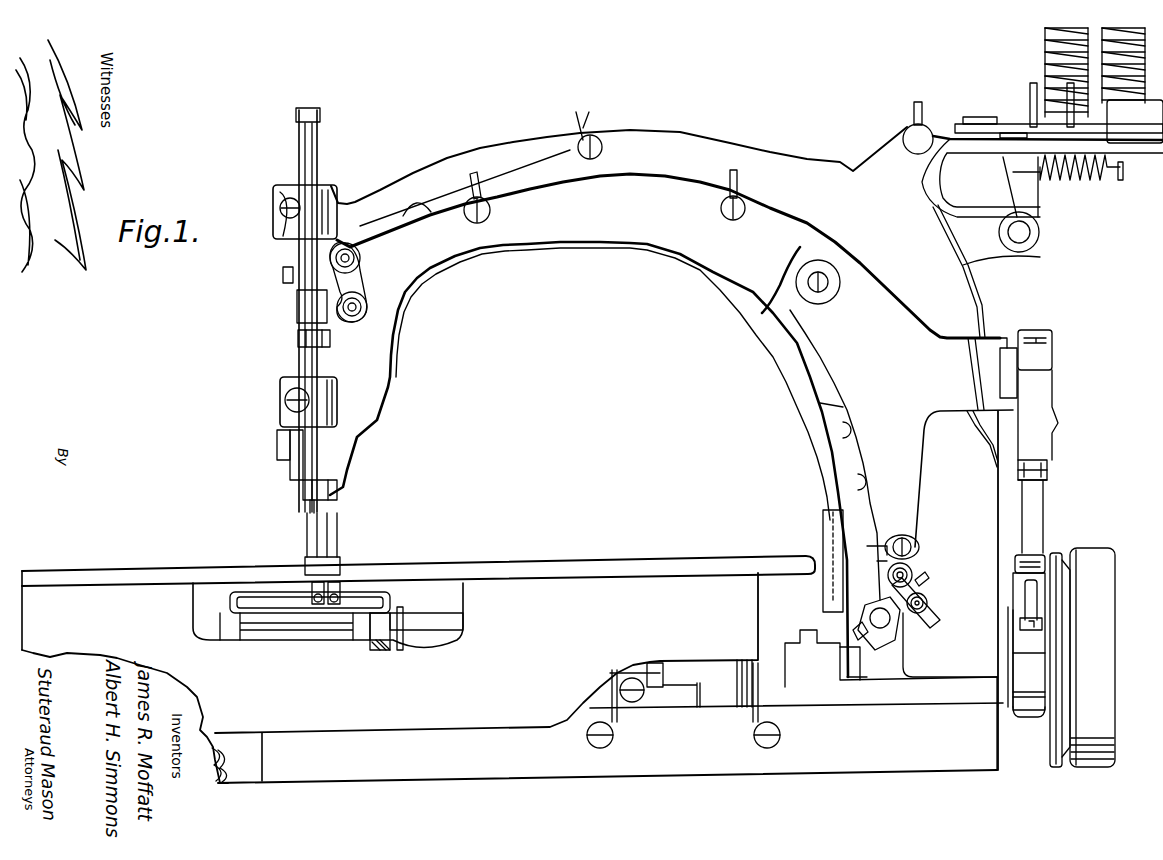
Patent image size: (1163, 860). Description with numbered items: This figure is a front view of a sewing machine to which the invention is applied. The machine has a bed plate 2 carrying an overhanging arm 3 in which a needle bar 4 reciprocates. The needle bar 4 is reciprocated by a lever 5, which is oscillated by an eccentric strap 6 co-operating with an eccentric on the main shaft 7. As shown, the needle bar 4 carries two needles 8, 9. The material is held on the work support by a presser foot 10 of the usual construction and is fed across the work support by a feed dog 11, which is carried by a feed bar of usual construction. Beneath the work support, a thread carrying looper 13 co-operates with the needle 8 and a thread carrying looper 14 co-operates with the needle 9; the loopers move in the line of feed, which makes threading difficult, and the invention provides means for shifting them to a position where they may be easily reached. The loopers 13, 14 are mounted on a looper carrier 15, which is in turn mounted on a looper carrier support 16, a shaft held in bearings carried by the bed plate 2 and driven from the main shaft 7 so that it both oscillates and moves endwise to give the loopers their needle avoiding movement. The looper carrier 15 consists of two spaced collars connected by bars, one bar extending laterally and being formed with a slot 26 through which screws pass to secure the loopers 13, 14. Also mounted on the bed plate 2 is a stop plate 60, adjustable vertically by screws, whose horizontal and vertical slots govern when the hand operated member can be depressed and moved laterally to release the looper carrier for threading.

The bed plate 2 is at (677, 745).
The overhanging arm 3 is at (803, 353).
The needle bar 4 is at (313, 358).
The lever 5 is at (617, 233).
The eccentric strap 6 is at (1033, 500).
The main shaft 7 is at (553, 567).
The needle 8 is at (330, 508).
The needle 9 is at (310, 508).
The presser foot 10 is at (307, 560).
The feed dog 11 is at (767, 663).
The thread carrying looper 13 is at (333, 590).
The thread carrying looper 14 is at (312, 590).
The looper carrier 15 is at (383, 623).
The looper carrier support 16 is at (435, 622).
The slot 26 is at (290, 604).
The stop plate 60 is at (243, 752).